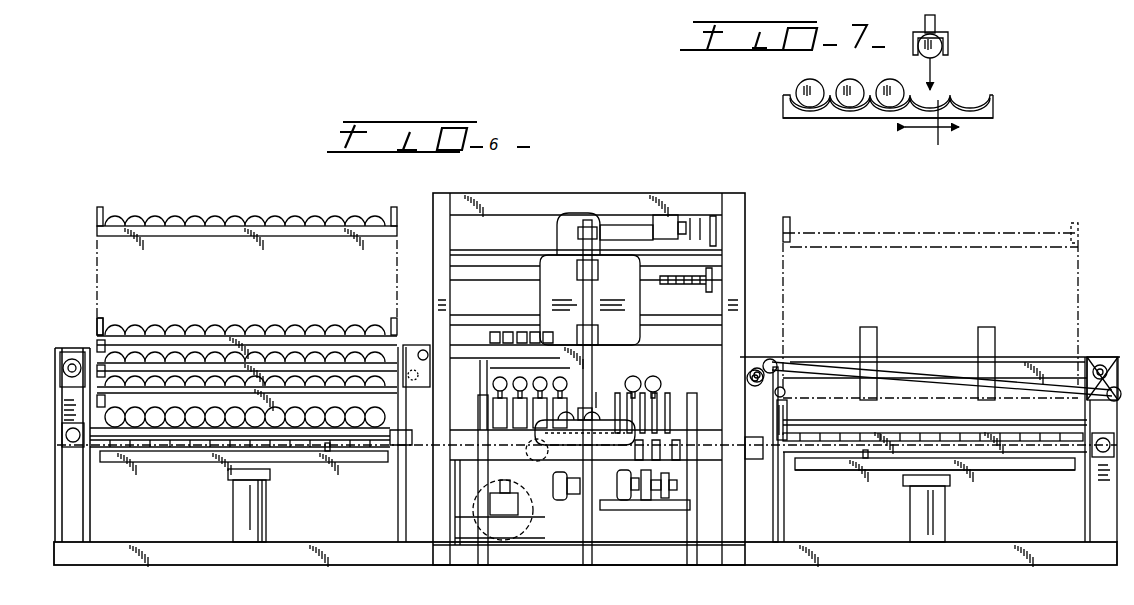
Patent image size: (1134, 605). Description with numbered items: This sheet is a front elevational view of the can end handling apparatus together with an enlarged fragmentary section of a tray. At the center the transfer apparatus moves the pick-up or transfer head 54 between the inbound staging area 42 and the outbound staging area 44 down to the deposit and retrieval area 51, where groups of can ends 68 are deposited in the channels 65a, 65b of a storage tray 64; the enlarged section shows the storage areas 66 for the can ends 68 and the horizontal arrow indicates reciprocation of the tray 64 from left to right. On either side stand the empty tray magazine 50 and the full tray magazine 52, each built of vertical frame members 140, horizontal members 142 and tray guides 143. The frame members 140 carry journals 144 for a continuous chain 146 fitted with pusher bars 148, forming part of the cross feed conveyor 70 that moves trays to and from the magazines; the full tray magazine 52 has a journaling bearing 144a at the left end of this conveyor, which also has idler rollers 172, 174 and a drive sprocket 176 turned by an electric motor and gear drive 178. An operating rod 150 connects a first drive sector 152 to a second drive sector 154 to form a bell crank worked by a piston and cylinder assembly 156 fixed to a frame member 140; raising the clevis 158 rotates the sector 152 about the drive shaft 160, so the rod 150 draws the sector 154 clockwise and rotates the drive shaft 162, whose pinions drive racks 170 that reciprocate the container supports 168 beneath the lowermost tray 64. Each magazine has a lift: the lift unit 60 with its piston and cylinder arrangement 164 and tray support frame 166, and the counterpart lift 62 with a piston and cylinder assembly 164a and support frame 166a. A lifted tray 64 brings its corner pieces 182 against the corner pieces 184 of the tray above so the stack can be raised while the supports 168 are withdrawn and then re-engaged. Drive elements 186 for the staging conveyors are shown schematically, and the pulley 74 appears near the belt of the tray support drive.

In FIG. 6, the inbound staging area 42 is at (465, 380).
In FIG. 6, the outbound staging area 44 is at (652, 378).
In FIG. 6, the empty tray magazine 50 is at (924, 312).
In FIG. 6, the deposit and retrieval area 51 is at (596, 406).
In FIG. 7, the deposit and retrieval area 51 is at (968, 100).
In FIG. 6, the full tray magazine 52 is at (259, 317).
In FIG. 6, the pick-up or transfer head 54 is at (625, 400).
In FIG. 6, the lift unit 60 is at (906, 531).
In FIG. 6, the lift 62 is at (240, 520).
In FIG. 6, the tray 64 is at (170, 229).
In FIG. 7, the tray 64 is at (985, 126).
In FIG. 7, the channel 65a is at (932, 131).
In FIG. 7, the channel 65b is at (995, 108).
In FIG. 7, the storage area 66 is at (807, 110).
In FIG. 6, the can end 68 is at (560, 418).
In FIG. 7, the can end 68 is at (797, 80).
In FIG. 6, the cross feed conveyor 70 is at (786, 466).
In FIG. 6, the pulley 74 is at (773, 356).
In FIG. 6, the vertical frame member 140 is at (766, 532).
In FIG. 6, the horizontal member 142 is at (1018, 364).
In FIG. 6, the tray guide 143 is at (877, 340).
In FIG. 6, the journal 144 is at (1093, 457).
In FIG. 6, the journaling bearing 144a is at (76, 447).
In FIG. 6, the continuous chain 146 is at (957, 452).
In FIG. 6, the pusher bar 148 is at (328, 451).
In FIG. 6, the operating rod 150 is at (818, 365).
In FIG. 6, the first drive sector 152 is at (783, 386).
In FIG. 6, the second drive sector 154 is at (1114, 357).
In FIG. 6, the piston and cylinder assembly 156 is at (777, 421).
In FIG. 6, the clevis 158 is at (828, 394).
In FIG. 6, the drive shaft 160 is at (68, 352).
In FIG. 6, the drive shaft 162 is at (750, 363).
In FIG. 6, the piston and cylinder arrangement 164 is at (930, 527).
In FIG. 6, the piston and cylinder assembly 164a is at (263, 507).
In FIG. 6, the tray support frame 166 is at (828, 465).
In FIG. 6, the support frame 166a is at (208, 462).
In FIG. 6, the reciprocal container support 168 is at (105, 397).
In FIG. 6, the rack 170 is at (93, 385).
In FIG. 6, the idler roller 172 is at (468, 462).
In FIG. 6, the idler roller 174 is at (537, 461).
In FIG. 6, the drive sprocket 176 is at (470, 462).
In FIG. 6, the electric motor and gear drive 178 is at (502, 512).
In FIG. 6, the corner piece 182 is at (100, 318).
In FIG. 6, the corner piece 184 is at (105, 236).
In FIG. 6, the drive elements 186 is at (677, 509).